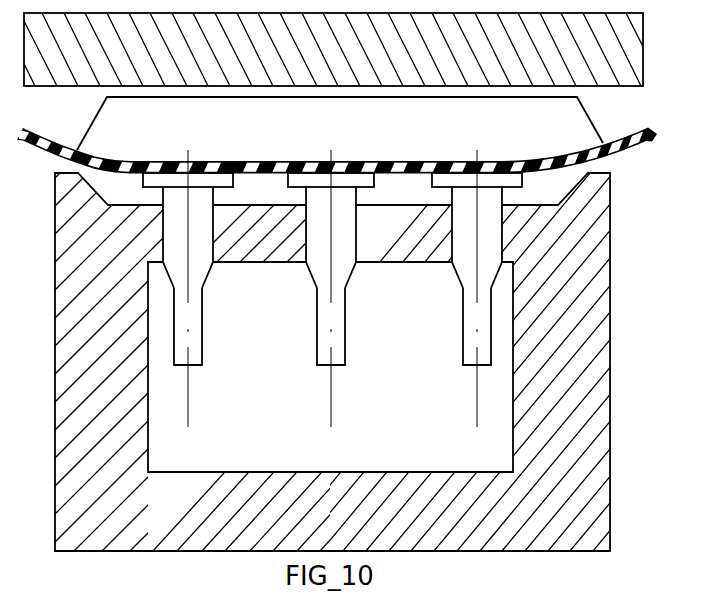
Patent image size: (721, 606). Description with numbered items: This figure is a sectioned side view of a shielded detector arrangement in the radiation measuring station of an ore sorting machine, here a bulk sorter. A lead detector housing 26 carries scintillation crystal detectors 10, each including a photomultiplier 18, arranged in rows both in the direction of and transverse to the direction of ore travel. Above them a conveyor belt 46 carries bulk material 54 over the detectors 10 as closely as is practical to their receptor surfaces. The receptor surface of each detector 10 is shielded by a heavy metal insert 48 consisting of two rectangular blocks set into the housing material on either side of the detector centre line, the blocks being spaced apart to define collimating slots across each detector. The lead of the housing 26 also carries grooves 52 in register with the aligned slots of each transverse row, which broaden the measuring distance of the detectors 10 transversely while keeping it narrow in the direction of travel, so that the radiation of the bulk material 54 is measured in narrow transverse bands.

The scintillation crystal detector 10 is at (315, 272).
The photomultiplier 18 is at (336, 330).
The detector housing 26 is at (595, 340).
The conveyor belt 46 is at (269, 160).
The heavy metal insert 48 is at (208, 178).
The groove 52 is at (408, 188).
The bulk material 54 is at (582, 137).